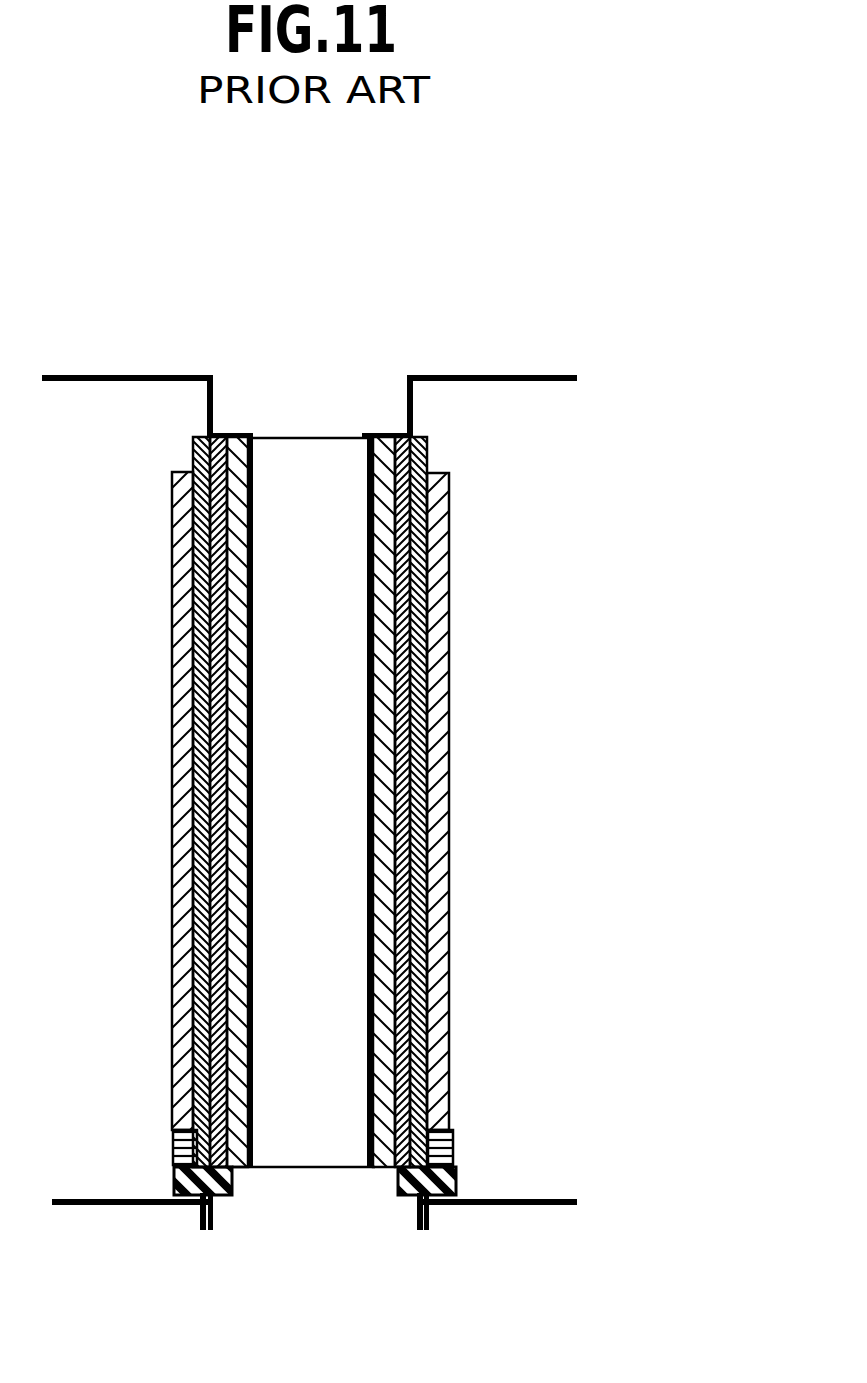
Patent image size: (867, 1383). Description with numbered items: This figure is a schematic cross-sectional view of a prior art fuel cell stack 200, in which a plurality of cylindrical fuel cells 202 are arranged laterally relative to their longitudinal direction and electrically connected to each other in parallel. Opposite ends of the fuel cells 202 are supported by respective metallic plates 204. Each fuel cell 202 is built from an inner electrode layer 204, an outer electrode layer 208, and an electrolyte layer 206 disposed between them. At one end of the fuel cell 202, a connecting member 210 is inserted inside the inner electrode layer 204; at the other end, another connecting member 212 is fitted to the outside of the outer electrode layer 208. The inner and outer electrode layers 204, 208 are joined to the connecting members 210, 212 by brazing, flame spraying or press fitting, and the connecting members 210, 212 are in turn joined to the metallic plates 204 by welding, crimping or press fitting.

The fuel cell stack 200 is at (536, 305).
The cylindrical fuel cell 202 is at (448, 615).
The metallic plate 204 is at (551, 376).
The electrolyte layer 206 is at (405, 798).
The outer electrode layer 208 is at (420, 887).
The connecting member 210 is at (412, 410).
The connecting member 212 is at (455, 1165).